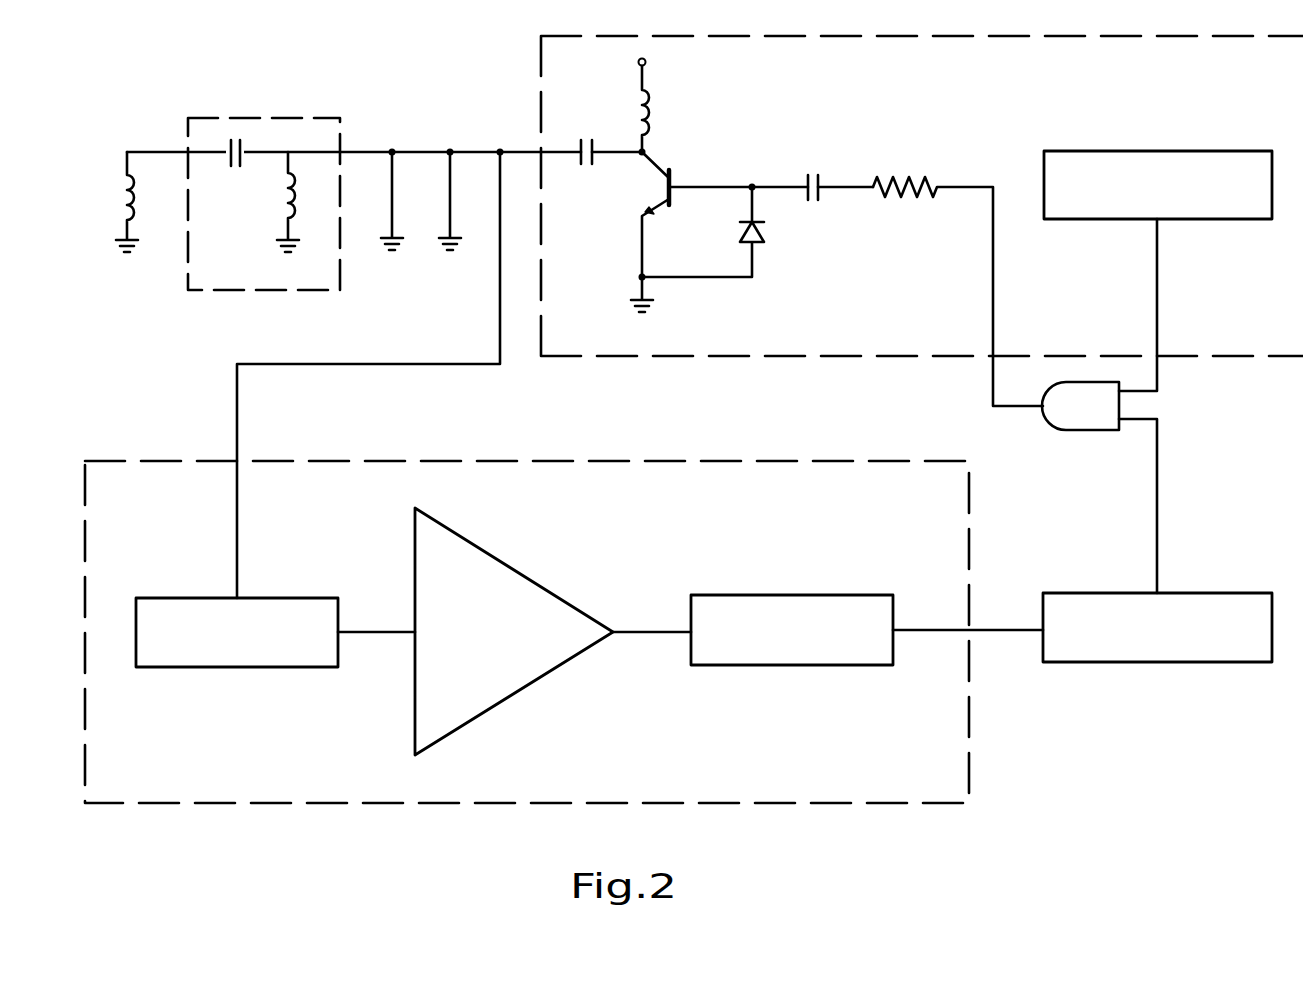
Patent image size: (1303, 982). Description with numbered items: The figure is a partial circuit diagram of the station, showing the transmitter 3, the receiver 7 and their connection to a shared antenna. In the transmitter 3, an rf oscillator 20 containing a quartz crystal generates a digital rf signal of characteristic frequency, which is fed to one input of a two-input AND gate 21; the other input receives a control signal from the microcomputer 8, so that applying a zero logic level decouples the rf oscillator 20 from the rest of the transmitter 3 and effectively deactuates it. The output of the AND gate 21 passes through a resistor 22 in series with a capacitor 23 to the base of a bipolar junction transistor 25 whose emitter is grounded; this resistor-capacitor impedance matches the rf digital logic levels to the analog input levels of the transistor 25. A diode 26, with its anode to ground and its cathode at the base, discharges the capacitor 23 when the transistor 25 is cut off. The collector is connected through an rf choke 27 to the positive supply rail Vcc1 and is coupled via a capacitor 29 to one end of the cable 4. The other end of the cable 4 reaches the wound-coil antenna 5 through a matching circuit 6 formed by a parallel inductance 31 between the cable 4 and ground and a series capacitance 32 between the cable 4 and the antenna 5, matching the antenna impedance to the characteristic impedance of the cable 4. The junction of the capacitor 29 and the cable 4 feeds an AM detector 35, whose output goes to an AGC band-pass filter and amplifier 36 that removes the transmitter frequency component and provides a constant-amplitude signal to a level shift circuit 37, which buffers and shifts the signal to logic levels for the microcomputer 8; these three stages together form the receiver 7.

The transmitter 3 is at (541, 65).
The cable 4 is at (415, 150).
The antenna 5 is at (118, 190).
The matching circuit 6 is at (258, 290).
The receiver 7 is at (969, 740).
The microcomputer 8 is at (1190, 591).
The rf oscillator 20 is at (1143, 150).
The 2-input AND gate 21 is at (1088, 421).
The resistor 22 is at (891, 176).
The capacitor 23 is at (807, 175).
The bipolar junction transistor 25 is at (673, 172).
The diode 26 is at (764, 232).
The rf choke 27 is at (652, 122).
The capacitor 29 is at (580, 138).
The parallel inductance 31 is at (300, 196).
The series capacitance 32 is at (231, 168).
The AM detector 35 is at (278, 597).
The AGC band-pass filter and amplifier 36 is at (549, 589).
The level shift circuit 37 is at (792, 595).